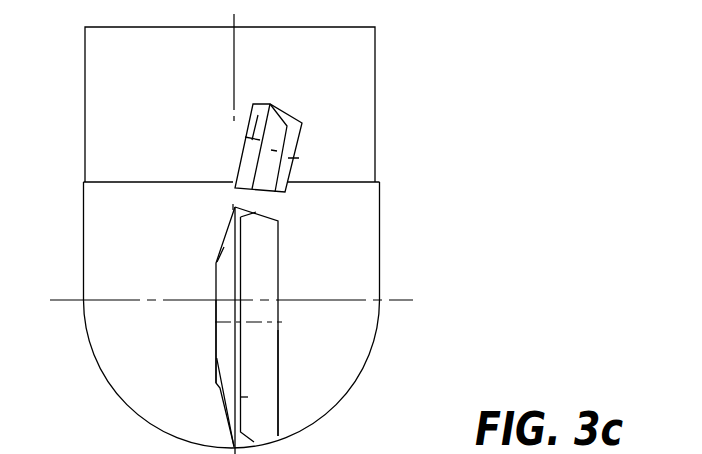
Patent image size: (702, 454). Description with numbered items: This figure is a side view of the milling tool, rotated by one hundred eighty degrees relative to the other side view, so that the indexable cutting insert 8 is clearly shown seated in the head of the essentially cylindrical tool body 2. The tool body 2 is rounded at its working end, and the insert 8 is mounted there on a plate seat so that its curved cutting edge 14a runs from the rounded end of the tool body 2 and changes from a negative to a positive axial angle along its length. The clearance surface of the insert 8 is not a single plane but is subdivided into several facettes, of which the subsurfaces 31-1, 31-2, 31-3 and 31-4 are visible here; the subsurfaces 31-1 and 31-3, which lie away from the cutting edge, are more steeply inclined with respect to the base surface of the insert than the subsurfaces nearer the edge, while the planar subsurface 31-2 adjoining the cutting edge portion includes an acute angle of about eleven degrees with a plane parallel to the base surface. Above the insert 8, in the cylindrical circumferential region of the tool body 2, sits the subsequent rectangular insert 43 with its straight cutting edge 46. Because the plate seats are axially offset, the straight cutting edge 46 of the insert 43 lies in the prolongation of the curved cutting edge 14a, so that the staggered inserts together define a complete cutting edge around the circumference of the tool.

The tool body 2 is at (345, 113).
The indexable cutting insert 8 is at (201, 267).
The insert with straight cutting edge 43 is at (285, 128).
The straight cutting edge 46 is at (245, 137).
The clearance subsurface 31-1 is at (260, 257).
The clearance subsurface 31-2 is at (228, 287).
The clearance subsurface 31-3 is at (260, 363).
The clearance subsurface 31-4 is at (248, 397).
The curved cutting edge 14a is at (227, 348).